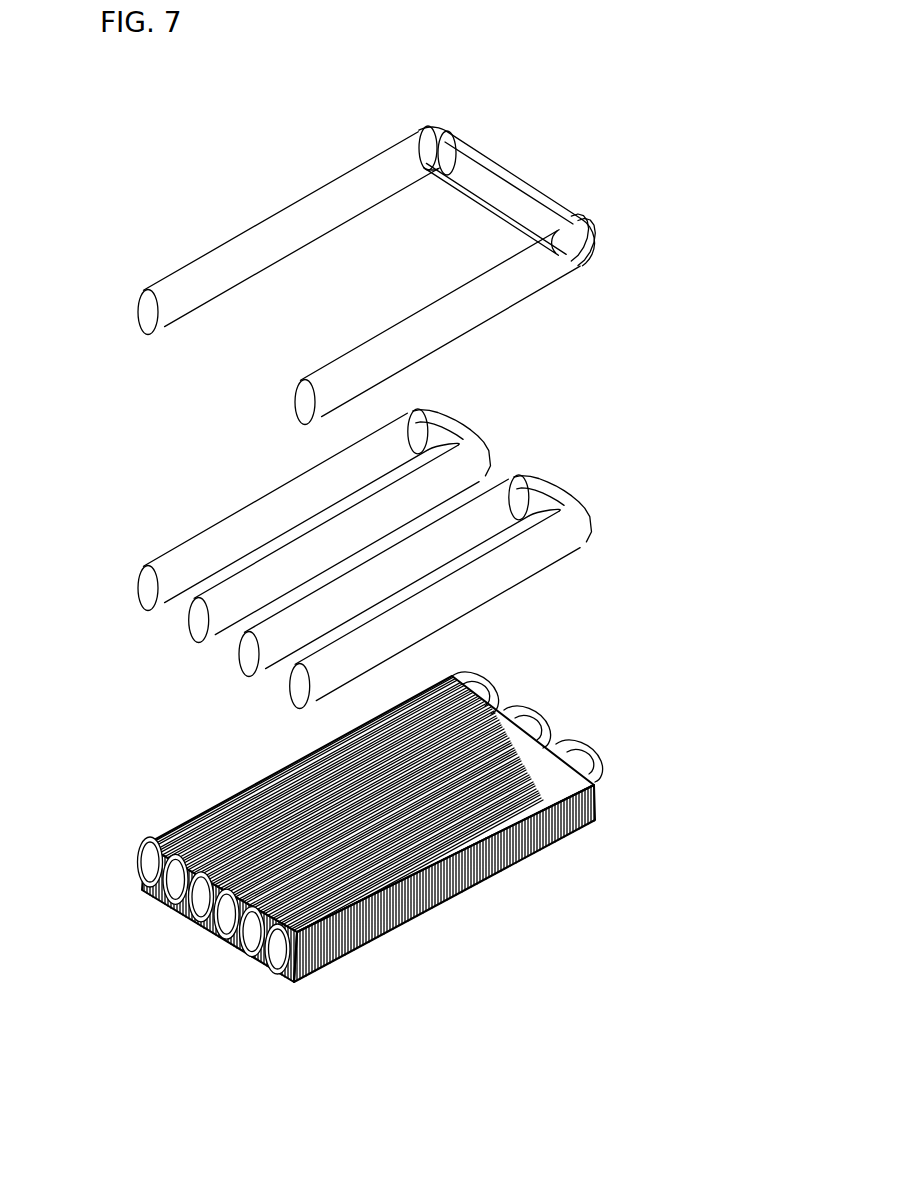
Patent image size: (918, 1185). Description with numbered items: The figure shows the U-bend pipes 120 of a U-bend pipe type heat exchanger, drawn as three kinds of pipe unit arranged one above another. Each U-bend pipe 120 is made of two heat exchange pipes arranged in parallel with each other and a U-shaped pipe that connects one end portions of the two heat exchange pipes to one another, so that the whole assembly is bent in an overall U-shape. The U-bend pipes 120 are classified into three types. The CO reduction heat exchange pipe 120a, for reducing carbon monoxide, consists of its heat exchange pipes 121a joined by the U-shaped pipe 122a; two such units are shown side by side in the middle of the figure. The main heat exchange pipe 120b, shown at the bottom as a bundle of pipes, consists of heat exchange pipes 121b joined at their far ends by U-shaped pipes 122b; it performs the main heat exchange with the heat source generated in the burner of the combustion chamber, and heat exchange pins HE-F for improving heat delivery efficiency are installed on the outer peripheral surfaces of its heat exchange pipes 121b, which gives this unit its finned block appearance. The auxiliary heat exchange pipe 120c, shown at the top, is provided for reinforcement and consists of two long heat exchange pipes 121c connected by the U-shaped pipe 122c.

The U-bend pipe 120 is at (213, 129).
The CO reduction heat exchange pipe 120a is at (390, 526).
The heat exchange pipe 121a is at (238, 583).
The U-shaped pipe 122a is at (482, 447).
The main heat exchange pipe 120b is at (405, 834).
The heat exchange pipe 121b is at (263, 968).
The U-shaped pipe 122b is at (523, 715).
The auxiliary heat exchange pipe 120c is at (370, 253).
The heat exchange pipe 121c is at (347, 380).
The U-shaped pipe 122c is at (543, 195).
The heat exchange pin HE-F is at (488, 877).